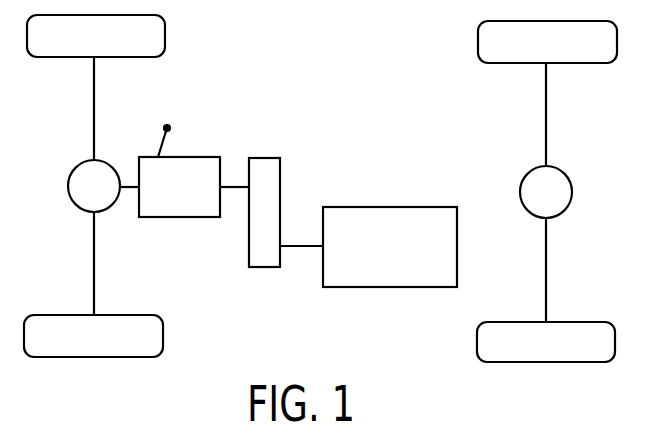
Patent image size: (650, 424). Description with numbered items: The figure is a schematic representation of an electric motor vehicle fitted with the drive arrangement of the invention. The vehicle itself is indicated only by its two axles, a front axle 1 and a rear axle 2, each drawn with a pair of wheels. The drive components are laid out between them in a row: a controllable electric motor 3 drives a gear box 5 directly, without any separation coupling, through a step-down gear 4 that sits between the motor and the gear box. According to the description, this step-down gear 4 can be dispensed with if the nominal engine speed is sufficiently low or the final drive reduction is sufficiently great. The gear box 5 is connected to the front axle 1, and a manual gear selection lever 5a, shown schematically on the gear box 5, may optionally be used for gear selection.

The front axle 1 is at (93, 238).
The rear axle 2 is at (546, 234).
The controllable electric motor 3 is at (393, 225).
The step-down gear 4 is at (265, 185).
The gear box 5 is at (180, 175).
The manual gear selection lever 5a is at (162, 138).